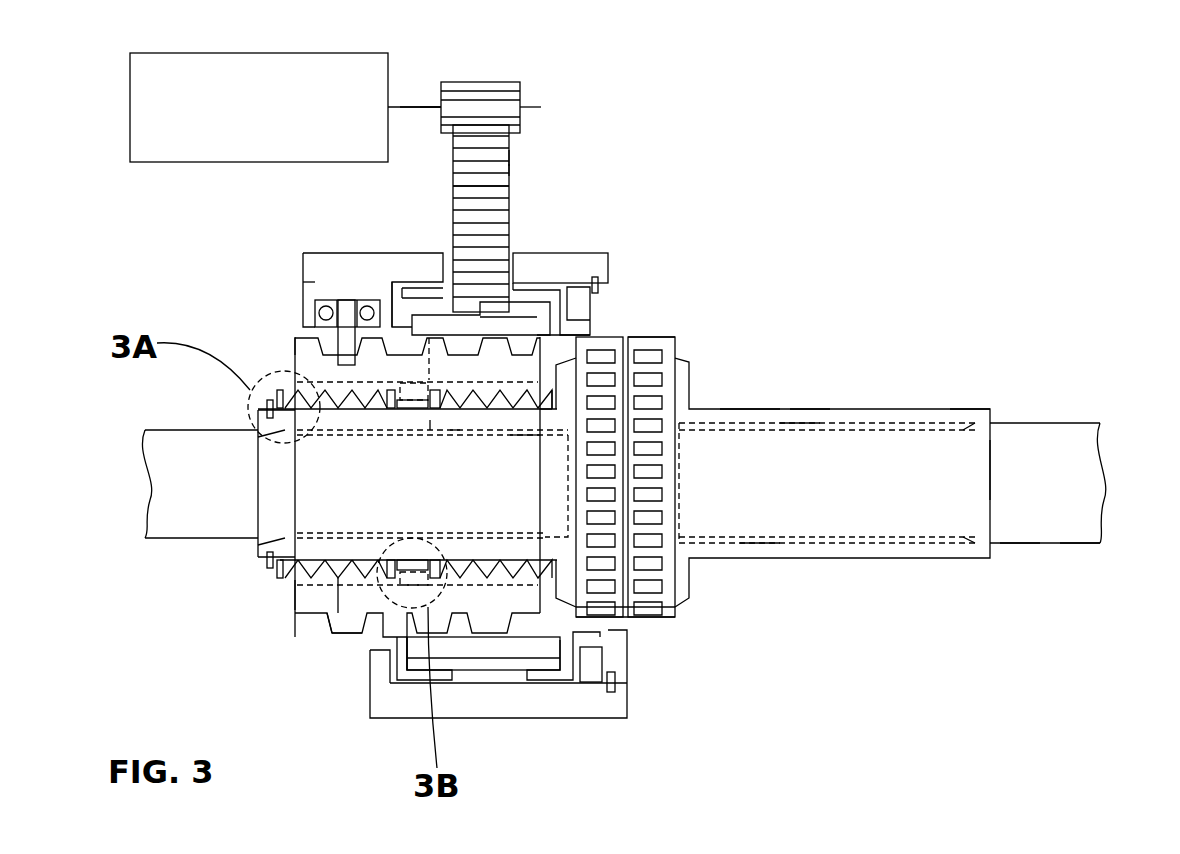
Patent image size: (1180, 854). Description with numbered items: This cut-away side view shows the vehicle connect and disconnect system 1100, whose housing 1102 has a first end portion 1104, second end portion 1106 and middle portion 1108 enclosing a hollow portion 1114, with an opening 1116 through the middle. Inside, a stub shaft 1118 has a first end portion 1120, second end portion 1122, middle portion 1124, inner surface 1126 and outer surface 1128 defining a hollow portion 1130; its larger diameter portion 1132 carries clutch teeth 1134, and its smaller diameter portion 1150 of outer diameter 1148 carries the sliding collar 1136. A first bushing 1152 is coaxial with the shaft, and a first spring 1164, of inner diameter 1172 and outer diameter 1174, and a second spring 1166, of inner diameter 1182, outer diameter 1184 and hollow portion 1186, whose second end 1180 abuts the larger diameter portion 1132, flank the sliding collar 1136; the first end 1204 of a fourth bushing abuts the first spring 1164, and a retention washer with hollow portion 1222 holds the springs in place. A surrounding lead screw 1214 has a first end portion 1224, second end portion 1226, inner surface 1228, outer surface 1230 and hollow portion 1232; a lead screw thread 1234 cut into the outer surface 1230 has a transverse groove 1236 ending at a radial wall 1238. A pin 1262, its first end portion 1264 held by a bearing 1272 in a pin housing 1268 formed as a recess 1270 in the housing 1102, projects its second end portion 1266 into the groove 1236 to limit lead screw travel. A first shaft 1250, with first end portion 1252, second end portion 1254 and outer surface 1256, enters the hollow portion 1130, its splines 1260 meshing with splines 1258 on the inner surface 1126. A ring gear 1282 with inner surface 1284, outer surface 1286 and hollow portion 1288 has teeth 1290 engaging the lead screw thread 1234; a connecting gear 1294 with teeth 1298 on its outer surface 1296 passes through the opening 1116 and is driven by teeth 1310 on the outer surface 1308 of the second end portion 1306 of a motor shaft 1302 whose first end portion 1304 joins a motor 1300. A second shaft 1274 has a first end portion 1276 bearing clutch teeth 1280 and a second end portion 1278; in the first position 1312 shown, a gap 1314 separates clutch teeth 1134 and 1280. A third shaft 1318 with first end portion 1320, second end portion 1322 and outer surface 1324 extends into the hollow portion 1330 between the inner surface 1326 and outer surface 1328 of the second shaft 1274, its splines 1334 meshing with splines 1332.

The valve assembly 1100 is at (782, 238).
The housing section 1102 is at (608, 257).
The housing wall 1104 is at (590, 253).
The housing wall 1106 is at (303, 255).
The housing section 1108 is at (397, 253).
The toothed ring 1114 is at (300, 340).
The coil stack 1116 is at (512, 255).
The coil housing bottom 1118 is at (628, 620).
The lower spring 1120 is at (325, 560).
The lower spring segment 1122 is at (540, 558).
The upper stop block 1124 is at (363, 408).
The chamber passage 1126 is at (360, 535).
The stop element 1128 is at (445, 560).
The valve chamber 1130 is at (275, 480).
The connector 1132 is at (598, 292).
The coil column 1134 is at (628, 337).
The inner passage 1136 is at (432, 420).
The upper spring 1148 is at (322, 412).
The inlet stop 1150 is at (282, 432).
The lower stop 1152 is at (275, 575).
The lower wall 1164 is at (300, 612).
The lower stop block 1166 is at (411, 586).
The stop element 1172 is at (412, 560).
The lower bracket 1174 is at (372, 637).
The pawl 1180 is at (552, 402).
The spring end 1182 is at (515, 409).
The upper spring segment 1184 is at (490, 435).
The passage 1186 is at (530, 437).
The pedestal 1204 is at (481, 319).
The lower wall section 1214 is at (300, 597).
The lower inlet stop 1222 is at (265, 563).
The lower ring tooth 1224 is at (330, 590).
The lower toothed ring 1226 is at (490, 630).
The plate edge 1228 is at (400, 650).
The tooth base 1230 is at (355, 613).
The spring coil 1232 is at (340, 577).
The bottom housing 1234 is at (385, 640).
The upper stop pin 1236 is at (262, 393).
The index mark 1238 is at (427, 378).
The inlet conduit 1250 is at (148, 476).
The conduit chamfer 1252 is at (142, 428).
The inner bore 1254 is at (455, 440).
The conduit end 1256 is at (178, 428).
The bore end 1258 is at (515, 440).
The pin 1260 is at (552, 433).
The bearing ball 1262 is at (328, 302).
The drive shaft 1264 is at (347, 300).
The ring edge 1266 is at (340, 375).
The bearing ball 1268 is at (370, 302).
The bracket 1270 is at (315, 305).
The bearing 1272 is at (318, 312).
The outlet housing 1274 is at (748, 409).
The coil housing 1276 is at (703, 407).
The housing end 1278 is at (965, 409).
The coil column top 1280 is at (650, 337).
The bottom plate 1282 is at (484, 683).
The connector 1284 is at (616, 686).
The bottom bracket 1286 is at (517, 683).
The block 1288 is at (596, 647).
The pedestal edge 1290 is at (537, 347).
The coil winding 1294 is at (511, 158).
The coil winding 1296 is at (510, 169).
The coil winding 1298 is at (503, 192).
The controller 1300 is at (190, 52).
The wire 1302 is at (431, 106).
The wire 1304 is at (400, 106).
The wire end 1306 is at (527, 107).
The connection 1308 is at (408, 106).
The coil cap 1310 is at (478, 83).
The actuator 1312 is at (753, 617).
The coil bottom 1314 is at (662, 617).
The outlet conduit 1318 is at (1098, 452).
The bore edge 1320 is at (768, 522).
The conduit wall 1322 is at (1092, 545).
The conduit wall 1324 is at (1035, 545).
The inner bore 1326 is at (897, 425).
The housing top 1328 is at (805, 409).
The housing end face 1330 is at (987, 483).
The bore wall 1332 is at (800, 425).
The bore wall 1334 is at (842, 538).